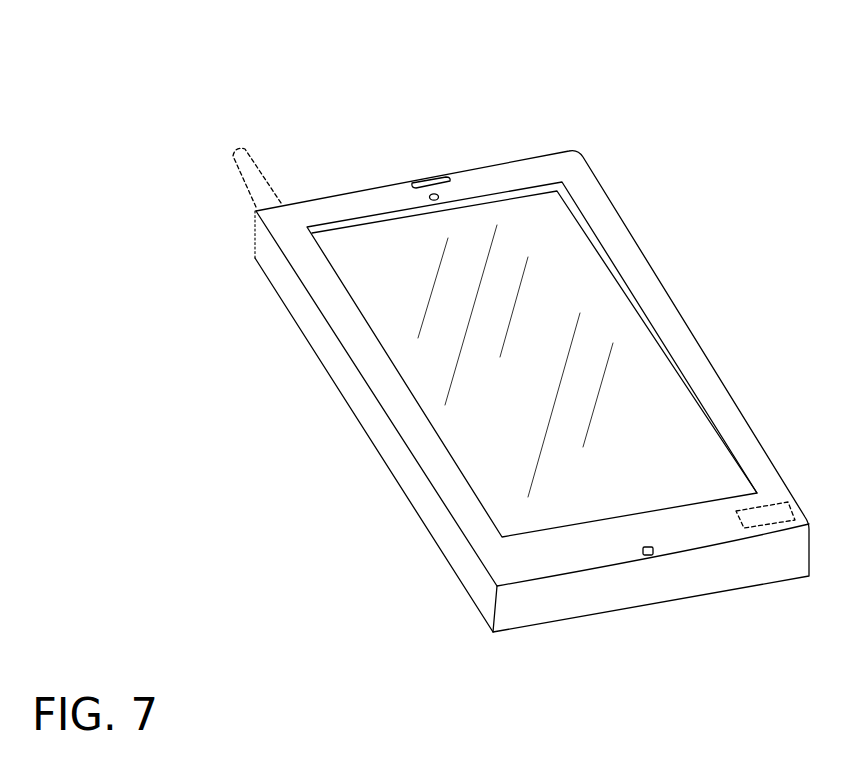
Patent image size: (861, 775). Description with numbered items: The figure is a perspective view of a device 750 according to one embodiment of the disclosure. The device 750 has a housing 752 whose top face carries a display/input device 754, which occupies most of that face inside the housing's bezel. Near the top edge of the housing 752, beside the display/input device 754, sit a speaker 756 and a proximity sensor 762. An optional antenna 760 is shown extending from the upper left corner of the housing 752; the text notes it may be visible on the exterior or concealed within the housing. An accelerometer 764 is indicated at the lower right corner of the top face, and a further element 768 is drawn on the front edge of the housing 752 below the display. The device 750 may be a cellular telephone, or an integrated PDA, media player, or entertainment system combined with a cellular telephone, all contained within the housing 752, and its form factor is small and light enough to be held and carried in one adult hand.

The device 750 is at (655, 82).
The housing 752 is at (626, 228).
The display/input device 754 is at (553, 337).
The speaker 756 is at (433, 192).
The antenna 760 is at (245, 150).
The proximity sensor 762 is at (445, 194).
The accelerometer 764 is at (778, 523).
The connector port 768 is at (648, 556).